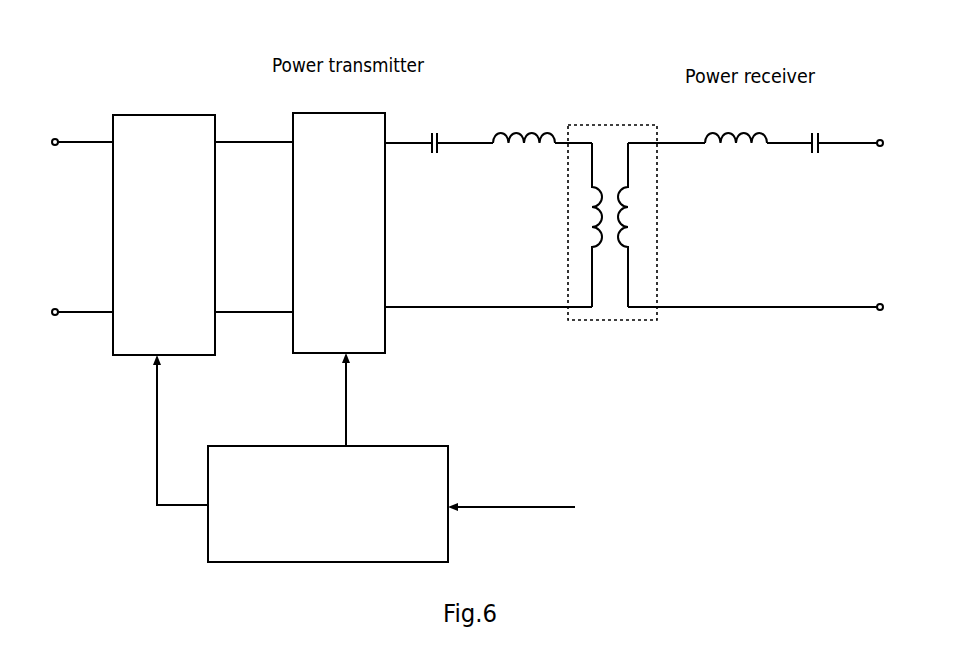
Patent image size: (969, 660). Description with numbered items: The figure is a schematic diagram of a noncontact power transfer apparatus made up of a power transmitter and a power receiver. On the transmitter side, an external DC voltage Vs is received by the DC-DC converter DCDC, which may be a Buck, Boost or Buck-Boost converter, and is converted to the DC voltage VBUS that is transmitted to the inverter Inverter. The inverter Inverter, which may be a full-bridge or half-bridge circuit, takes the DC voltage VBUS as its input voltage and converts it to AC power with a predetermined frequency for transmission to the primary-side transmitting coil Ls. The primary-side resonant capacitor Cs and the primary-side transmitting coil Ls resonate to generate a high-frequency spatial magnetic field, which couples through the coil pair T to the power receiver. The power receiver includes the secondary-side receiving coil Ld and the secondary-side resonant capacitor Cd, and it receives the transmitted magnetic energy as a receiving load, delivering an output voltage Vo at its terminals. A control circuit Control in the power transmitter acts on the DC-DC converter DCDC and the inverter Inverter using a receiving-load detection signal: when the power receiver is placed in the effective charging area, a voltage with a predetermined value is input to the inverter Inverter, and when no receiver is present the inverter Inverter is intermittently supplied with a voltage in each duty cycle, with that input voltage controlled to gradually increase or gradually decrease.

The external DC voltage Vs is at (73, 227).
The DC-DC converter DCDC is at (164, 235).
The DC voltage VBUS is at (254, 205).
The inverter Inverter is at (339, 233).
The primary-side resonant capacitor Cs is at (439, 131).
The primary-side transmitting coil Ls is at (542, 126).
The coupled coils / transformer T is at (612, 222).
The secondary-side receiving coil Ld is at (720, 125).
The secondary-side resonant capacitor Cd is at (838, 131).
The output voltage Vo is at (756, 225).
The control circuit Control is at (378, 457).